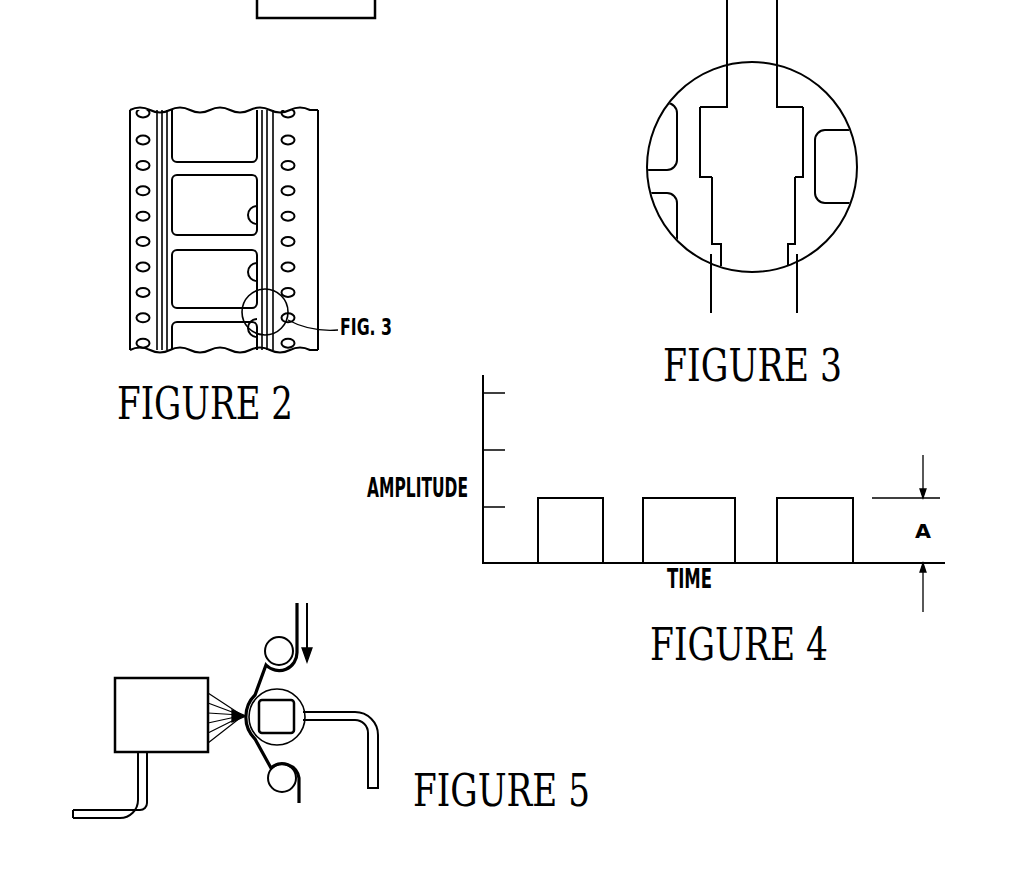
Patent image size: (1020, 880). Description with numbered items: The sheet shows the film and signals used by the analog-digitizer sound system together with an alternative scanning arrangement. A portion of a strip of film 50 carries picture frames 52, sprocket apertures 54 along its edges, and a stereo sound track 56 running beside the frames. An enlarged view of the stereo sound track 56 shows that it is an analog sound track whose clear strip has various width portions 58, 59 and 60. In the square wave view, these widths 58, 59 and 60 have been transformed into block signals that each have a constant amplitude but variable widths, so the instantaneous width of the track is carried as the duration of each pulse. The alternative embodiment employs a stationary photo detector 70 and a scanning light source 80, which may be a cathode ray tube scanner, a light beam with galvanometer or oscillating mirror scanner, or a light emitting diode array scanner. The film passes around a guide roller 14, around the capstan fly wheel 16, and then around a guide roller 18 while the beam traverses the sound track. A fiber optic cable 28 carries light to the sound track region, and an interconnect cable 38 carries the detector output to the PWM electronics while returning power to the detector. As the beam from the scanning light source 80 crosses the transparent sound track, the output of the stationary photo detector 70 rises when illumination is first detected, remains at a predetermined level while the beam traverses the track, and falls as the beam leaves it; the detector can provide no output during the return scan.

In FIG. 2, the strip of film 50 is at (318, 156).
In FIG. 2, the picture frames 52 is at (250, 223).
In FIG. 2, the sprocket apertures 54 is at (295, 191).
In FIG. 2, the stereo sound track 56 is at (282, 126).
In FIG. 3, the width portion 58 is at (685, 33).
In FIG. 4, the width portion 58 is at (508, 517).
In FIG. 3, the width portion 59 is at (790, 120).
In FIG. 4, the width portion 59 is at (708, 498).
In FIG. 3, the width portion 60 is at (763, 222).
In FIG. 4, the width portion 60 is at (742, 517).
In FIG. 5, the guide roller 14 is at (268, 643).
In FIG. 5, the capstan fly wheel 16 is at (292, 703).
In FIG. 5, the guide roller 18 is at (268, 778).
In FIG. 5, the fiber optic cable 28 is at (348, 710).
In FIG. 5, the interconnect cable 38 is at (120, 808).
In FIG. 5, the stationary photo detector 70 is at (122, 717).
In FIG. 5, the scanning light source 80 is at (292, 700).